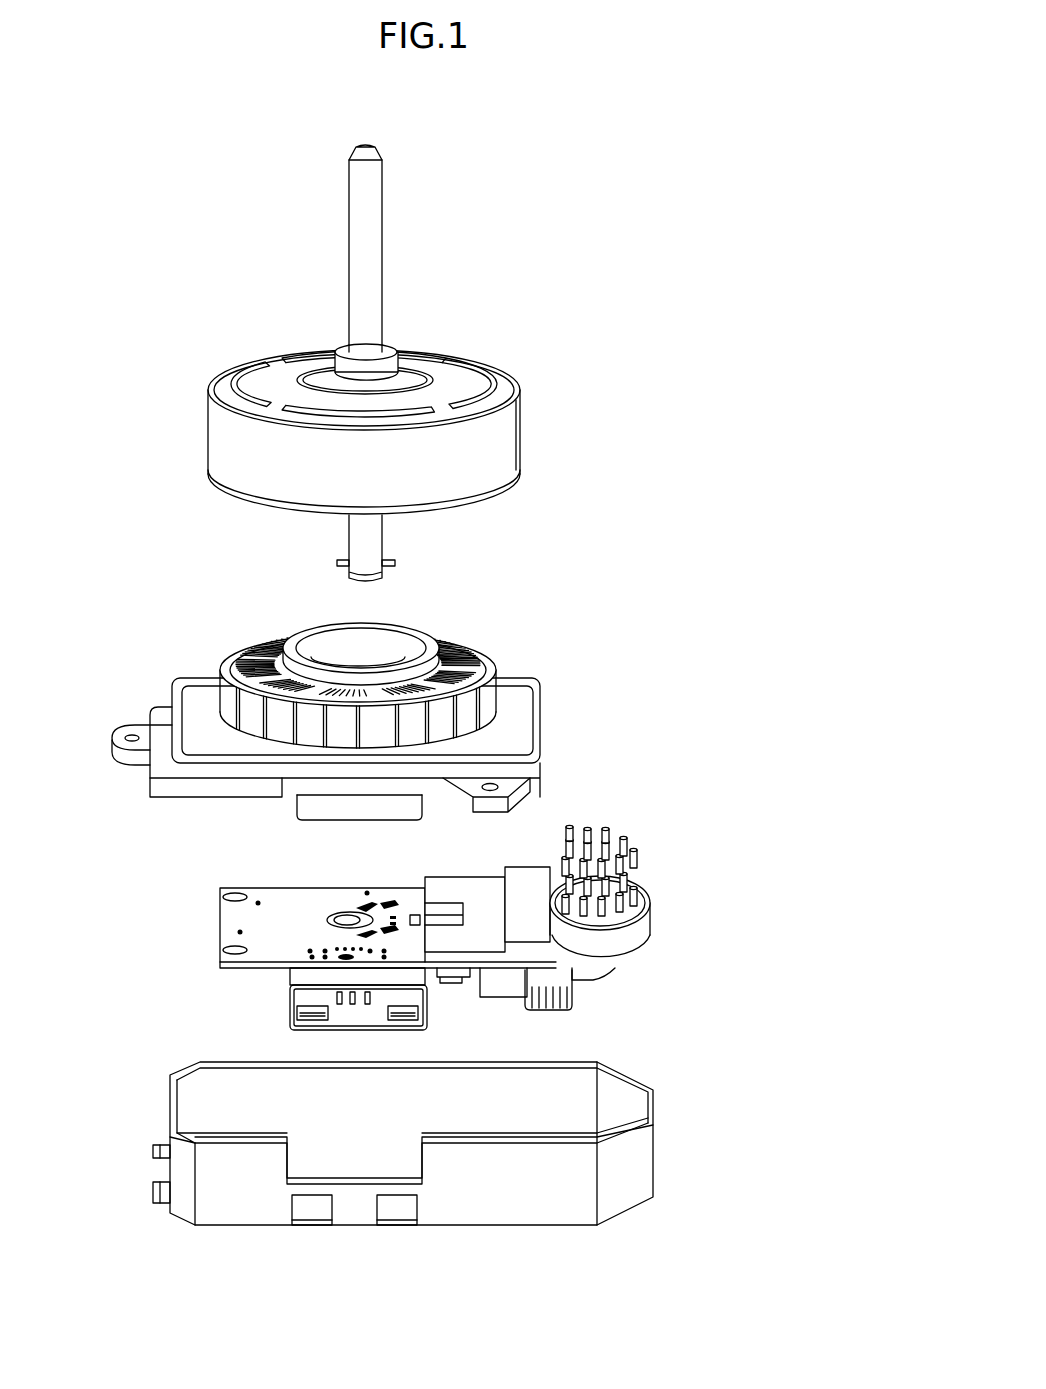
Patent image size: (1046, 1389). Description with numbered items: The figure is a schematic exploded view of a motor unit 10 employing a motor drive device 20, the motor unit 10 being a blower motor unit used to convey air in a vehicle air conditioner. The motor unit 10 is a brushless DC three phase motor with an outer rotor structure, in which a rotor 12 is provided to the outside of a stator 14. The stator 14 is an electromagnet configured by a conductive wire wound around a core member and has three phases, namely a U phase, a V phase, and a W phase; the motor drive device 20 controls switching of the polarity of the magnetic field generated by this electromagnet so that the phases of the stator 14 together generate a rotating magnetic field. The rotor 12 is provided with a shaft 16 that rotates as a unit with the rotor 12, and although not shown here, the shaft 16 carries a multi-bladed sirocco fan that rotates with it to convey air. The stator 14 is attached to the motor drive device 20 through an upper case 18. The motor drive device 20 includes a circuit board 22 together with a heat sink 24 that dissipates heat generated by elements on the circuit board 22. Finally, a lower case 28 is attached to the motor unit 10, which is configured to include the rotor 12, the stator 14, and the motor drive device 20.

The motor unit 10 is at (676, 223).
The rotor 12 is at (521, 428).
The stator 14 is at (470, 648).
The shaft 16 is at (382, 226).
The upper case 18 is at (541, 723).
The motor drive device 20 is at (436, 907).
The circuit board 22 is at (220, 925).
The heat sink 24 is at (708, 973).
The lower case 28 is at (654, 1150).